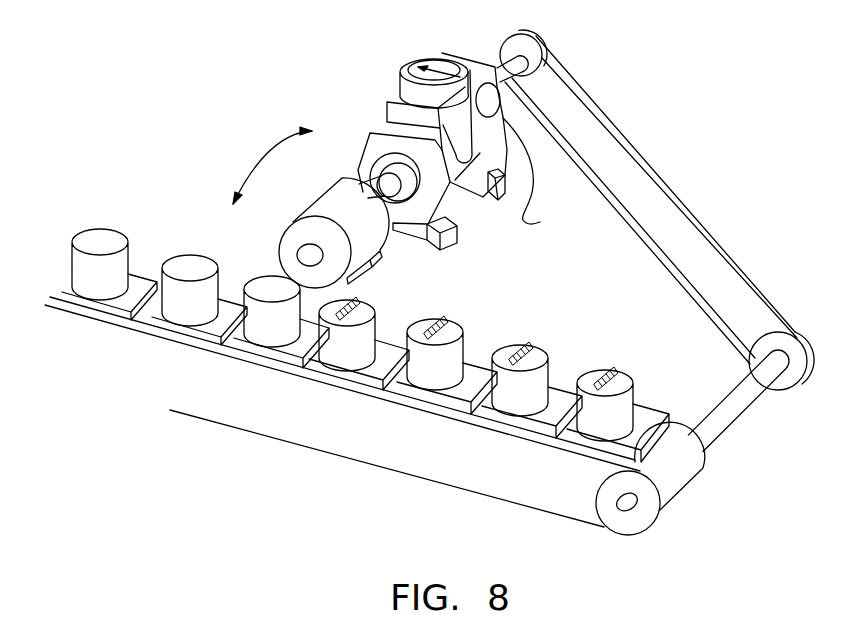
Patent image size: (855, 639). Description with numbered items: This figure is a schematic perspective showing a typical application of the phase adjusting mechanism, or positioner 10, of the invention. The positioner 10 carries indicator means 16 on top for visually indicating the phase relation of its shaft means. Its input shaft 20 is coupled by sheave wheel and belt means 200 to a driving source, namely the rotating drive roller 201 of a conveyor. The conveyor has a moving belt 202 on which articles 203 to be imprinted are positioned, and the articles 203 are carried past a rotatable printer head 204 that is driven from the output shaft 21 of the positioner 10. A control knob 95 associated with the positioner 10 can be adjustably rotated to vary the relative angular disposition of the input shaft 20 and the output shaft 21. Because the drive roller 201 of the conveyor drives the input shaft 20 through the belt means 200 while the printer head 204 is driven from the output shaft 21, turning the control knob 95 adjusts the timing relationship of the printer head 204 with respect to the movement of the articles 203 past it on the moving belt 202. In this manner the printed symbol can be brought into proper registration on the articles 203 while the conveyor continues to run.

The positioner 10 is at (358, 100).
The indicator means 16 is at (404, 60).
The input shaft 20 is at (553, 73).
The output shaft 21 is at (389, 190).
The control knob 95 is at (538, 178).
The sheave wheel and belt means 200 is at (692, 195).
The drive roller 201 is at (642, 522).
The moving belt 202 is at (172, 343).
The articles 203 is at (535, 348).
The printer head 204 is at (280, 243).